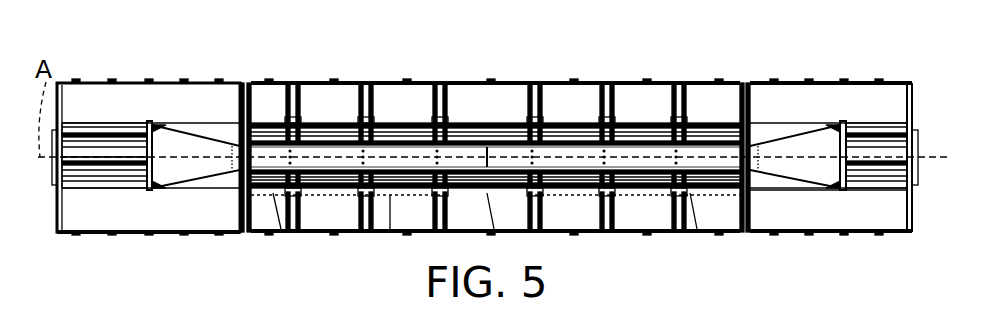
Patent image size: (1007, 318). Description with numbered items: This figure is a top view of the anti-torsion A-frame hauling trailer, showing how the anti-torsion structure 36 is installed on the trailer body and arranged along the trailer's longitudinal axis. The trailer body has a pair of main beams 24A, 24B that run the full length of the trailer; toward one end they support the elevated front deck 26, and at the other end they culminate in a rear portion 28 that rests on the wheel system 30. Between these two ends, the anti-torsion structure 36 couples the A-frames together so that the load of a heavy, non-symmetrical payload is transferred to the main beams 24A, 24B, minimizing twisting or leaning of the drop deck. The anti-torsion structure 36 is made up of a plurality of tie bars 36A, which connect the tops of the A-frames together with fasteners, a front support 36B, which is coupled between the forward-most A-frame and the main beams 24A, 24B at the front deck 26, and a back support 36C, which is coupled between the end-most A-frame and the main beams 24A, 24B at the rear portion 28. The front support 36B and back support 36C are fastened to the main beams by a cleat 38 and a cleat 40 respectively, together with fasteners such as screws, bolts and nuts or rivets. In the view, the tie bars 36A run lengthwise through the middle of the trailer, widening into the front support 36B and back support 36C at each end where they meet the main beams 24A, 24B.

The main beam 24A is at (75, 130).
The main beam 24B is at (92, 187).
The front deck 26 is at (97, 107).
The rear portion 28 is at (831, 238).
The wheel system 30 is at (903, 77).
The anti-torsion structure 36 is at (577, 135).
The tie bars 36A is at (330, 160).
The front support 36B is at (231, 129).
The back support 36C is at (760, 178).
The cleat 38 is at (147, 187).
The cleat 40 is at (865, 190).